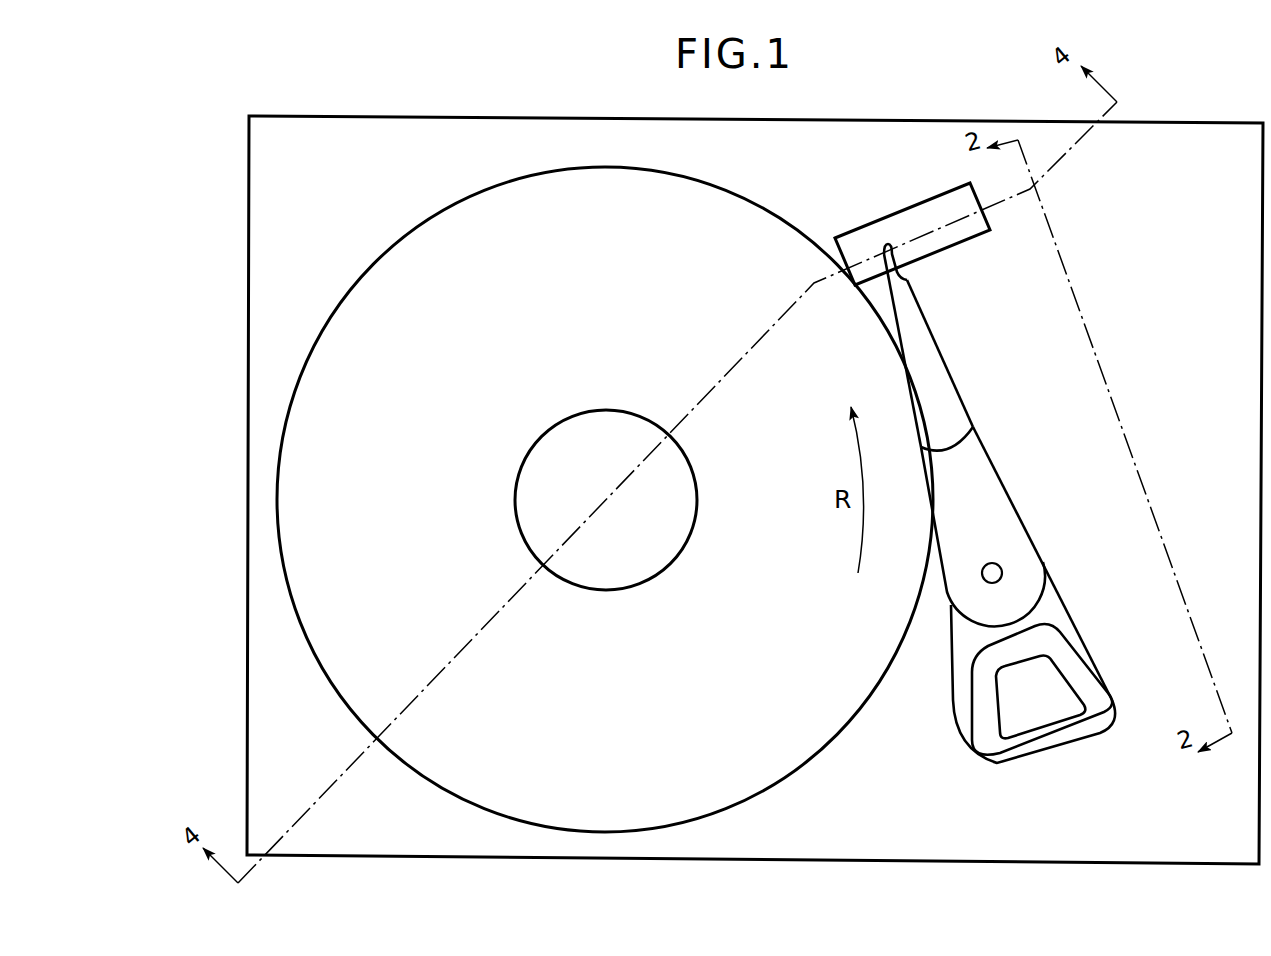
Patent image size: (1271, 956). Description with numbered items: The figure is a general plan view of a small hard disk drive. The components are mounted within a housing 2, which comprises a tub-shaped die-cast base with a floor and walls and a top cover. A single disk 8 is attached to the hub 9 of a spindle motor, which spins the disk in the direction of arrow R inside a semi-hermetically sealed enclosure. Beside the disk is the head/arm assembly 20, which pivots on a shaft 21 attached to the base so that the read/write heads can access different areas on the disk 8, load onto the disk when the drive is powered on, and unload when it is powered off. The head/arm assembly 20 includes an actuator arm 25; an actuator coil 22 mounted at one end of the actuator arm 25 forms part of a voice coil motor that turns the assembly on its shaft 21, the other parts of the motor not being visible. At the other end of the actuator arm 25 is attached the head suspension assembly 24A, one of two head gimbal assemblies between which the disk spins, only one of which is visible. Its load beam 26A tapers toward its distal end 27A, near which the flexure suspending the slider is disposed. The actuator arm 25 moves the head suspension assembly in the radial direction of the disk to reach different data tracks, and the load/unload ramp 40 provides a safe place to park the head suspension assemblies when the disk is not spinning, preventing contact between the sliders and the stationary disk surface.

The housing 2 is at (249, 202).
The disk 8 is at (815, 727).
The hub 9 is at (632, 560).
The head/arm assembly 20 is at (1039, 528).
The shaft 21 is at (1002, 572).
The actuator coil 22 is at (1060, 737).
The head suspension assembly 24A is at (975, 347).
The actuator arm 25 is at (1010, 498).
The load beam 26A is at (957, 390).
The distal end 27A is at (900, 290).
The load/unload ramp 40 is at (903, 211).